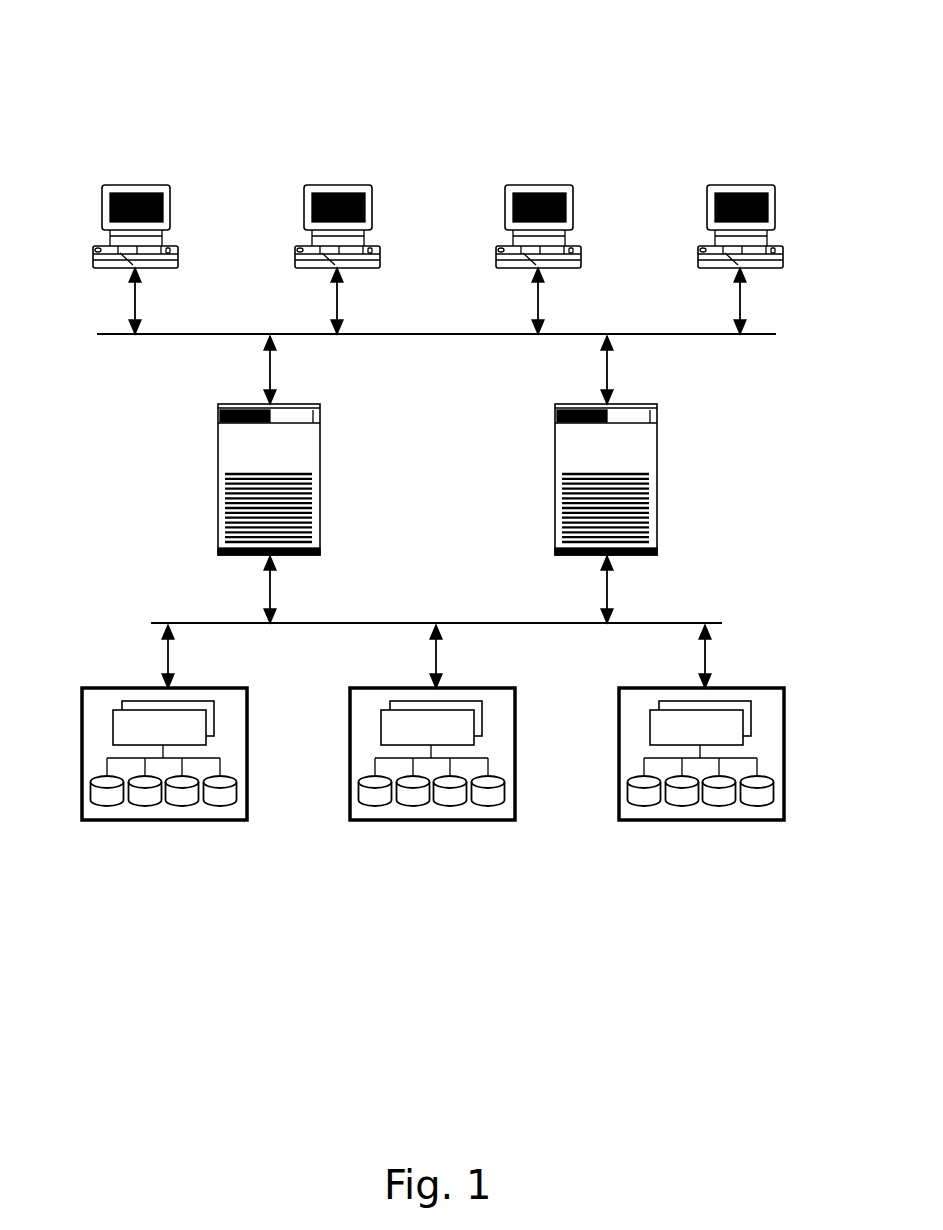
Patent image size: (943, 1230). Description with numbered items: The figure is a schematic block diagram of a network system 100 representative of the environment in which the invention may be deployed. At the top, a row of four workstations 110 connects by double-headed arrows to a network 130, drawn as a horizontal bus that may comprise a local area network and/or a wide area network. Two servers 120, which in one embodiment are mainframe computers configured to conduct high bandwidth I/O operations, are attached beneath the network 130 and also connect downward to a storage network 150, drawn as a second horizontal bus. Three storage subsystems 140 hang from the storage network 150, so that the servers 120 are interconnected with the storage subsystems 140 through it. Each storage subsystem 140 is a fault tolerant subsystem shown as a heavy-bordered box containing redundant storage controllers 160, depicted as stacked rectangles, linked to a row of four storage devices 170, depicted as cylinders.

The network system 100 is at (63, 52).
The workstations 110 is at (171, 186).
The servers 120 is at (321, 404).
The network 130 is at (437, 334).
The storage subsystems 140 is at (248, 688).
The storage network 150 is at (368, 623).
The storage controllers 160 is at (113, 726).
The storage devices 170 is at (92, 791).